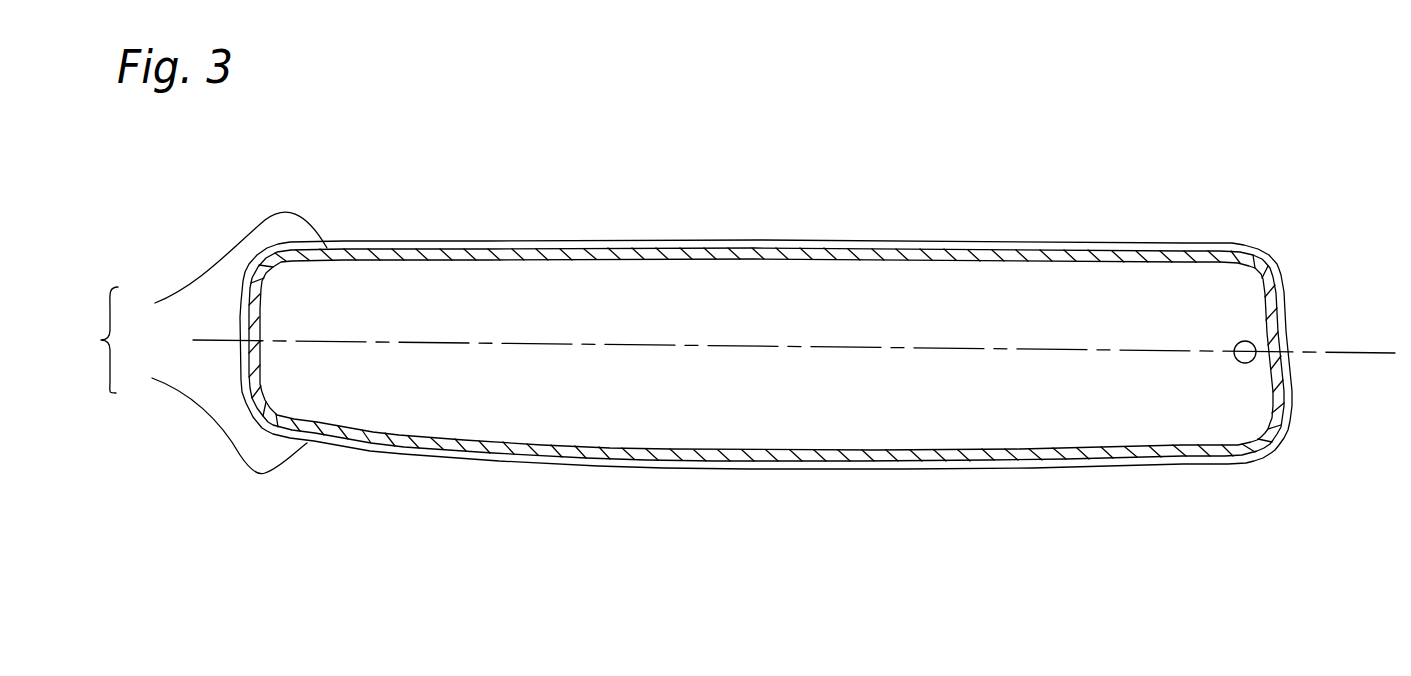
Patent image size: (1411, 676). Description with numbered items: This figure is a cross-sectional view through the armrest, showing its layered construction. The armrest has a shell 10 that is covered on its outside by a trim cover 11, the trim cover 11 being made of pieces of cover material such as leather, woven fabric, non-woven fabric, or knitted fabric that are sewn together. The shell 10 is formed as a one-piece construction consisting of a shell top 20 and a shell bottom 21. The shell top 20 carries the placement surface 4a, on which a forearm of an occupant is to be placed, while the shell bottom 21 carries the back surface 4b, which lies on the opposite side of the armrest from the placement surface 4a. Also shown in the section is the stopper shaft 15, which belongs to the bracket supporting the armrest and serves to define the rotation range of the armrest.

The shell 10 is at (96, 340).
The trim cover 11 is at (1268, 275).
The stopper shaft 15 is at (1253, 342).
The shell top 20 is at (224, 265).
The shell bottom 21 is at (214, 420).
The placement surface 4a is at (770, 240).
The back surface 4b is at (785, 470).